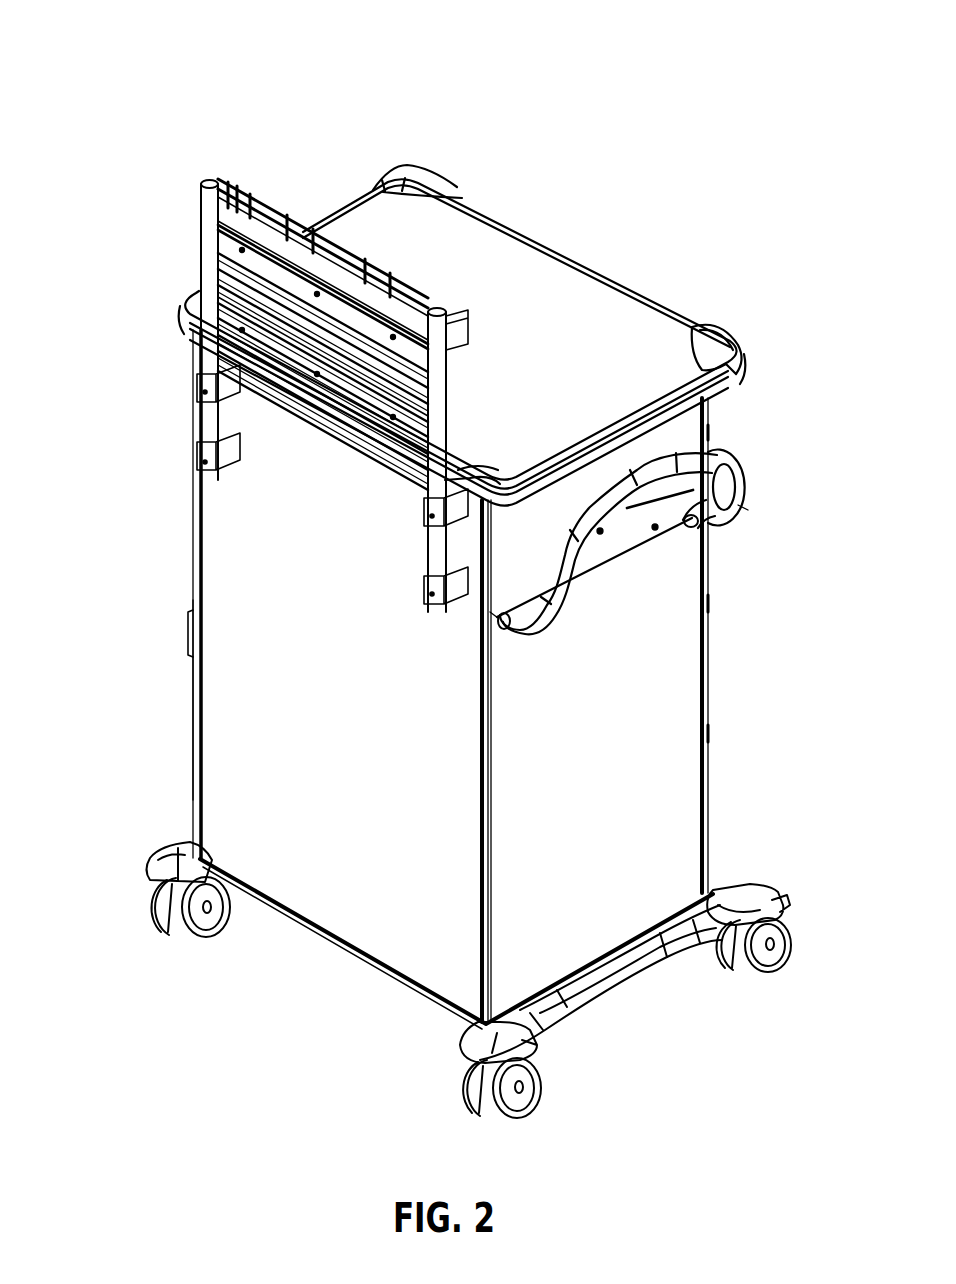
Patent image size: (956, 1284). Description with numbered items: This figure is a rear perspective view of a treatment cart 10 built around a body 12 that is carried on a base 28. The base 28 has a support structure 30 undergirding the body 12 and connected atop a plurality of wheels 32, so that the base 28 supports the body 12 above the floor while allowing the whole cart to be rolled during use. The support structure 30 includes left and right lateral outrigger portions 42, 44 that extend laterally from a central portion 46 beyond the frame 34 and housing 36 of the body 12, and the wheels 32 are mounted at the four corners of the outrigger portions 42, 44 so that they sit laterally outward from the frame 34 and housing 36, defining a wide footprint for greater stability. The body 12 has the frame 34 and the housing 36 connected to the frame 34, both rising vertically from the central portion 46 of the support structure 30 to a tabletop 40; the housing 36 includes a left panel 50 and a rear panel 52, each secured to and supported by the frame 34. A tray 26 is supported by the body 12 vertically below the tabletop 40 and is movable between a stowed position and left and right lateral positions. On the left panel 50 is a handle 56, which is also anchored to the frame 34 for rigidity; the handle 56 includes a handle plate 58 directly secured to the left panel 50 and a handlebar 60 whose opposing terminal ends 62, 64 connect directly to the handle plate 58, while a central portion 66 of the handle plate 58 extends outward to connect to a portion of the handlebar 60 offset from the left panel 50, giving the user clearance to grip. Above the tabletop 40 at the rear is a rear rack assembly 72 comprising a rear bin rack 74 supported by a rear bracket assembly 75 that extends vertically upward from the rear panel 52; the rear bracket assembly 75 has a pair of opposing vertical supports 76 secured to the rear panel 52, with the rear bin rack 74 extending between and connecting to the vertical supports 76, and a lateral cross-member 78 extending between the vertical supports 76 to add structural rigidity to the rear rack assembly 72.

The treatment cart 10 is at (112, 37).
The body 12 is at (78, 522).
The tray 26 is at (690, 432).
The base 28 is at (95, 862).
The support structure 30 is at (343, 957).
The wheels 32 is at (213, 918).
The frame 34 is at (193, 700).
The housing 36 is at (232, 642).
The tabletop 40 is at (510, 267).
The left lateral outrigger portion 42 is at (615, 967).
The right lateral outrigger portion 44 is at (172, 860).
The central portion 46 is at (408, 985).
The left panel 50 is at (640, 768).
The rear panel 52 is at (238, 567).
The handle 56 is at (752, 500).
The handle plate 58 is at (612, 580).
The handlebar 60 is at (730, 465).
The terminal end 62 is at (493, 628).
The terminal end 64 is at (684, 533).
The central portion 66 is at (614, 553).
The rear rack assembly 72 is at (278, 190).
The rear bin rack 74 is at (262, 225).
The rear bracket assembly 75 is at (200, 268).
The vertical supports 76 is at (207, 424).
The lateral cross-member 78 is at (255, 302).